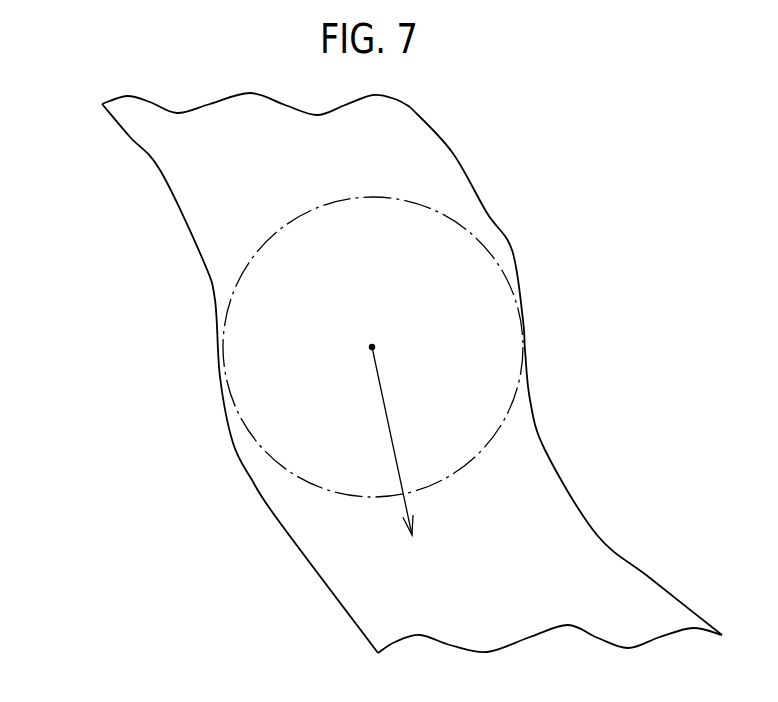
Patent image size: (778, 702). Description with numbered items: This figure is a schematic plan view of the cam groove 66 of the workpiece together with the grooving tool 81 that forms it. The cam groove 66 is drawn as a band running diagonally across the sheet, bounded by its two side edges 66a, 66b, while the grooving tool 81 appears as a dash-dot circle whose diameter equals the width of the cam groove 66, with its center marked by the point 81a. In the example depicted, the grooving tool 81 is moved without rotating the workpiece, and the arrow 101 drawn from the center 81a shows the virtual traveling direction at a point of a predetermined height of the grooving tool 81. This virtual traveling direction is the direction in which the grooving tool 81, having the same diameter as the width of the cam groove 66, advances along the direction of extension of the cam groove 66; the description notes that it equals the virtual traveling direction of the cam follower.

The cam groove 66 is at (565, 567).
The first side edge of sheet 66a is at (425, 125).
The second side edge of sheet 66b is at (140, 145).
The grooving tool 81 is at (250, 263).
The center of circular region 81a is at (372, 347).
The arrow 101 is at (450, 478).